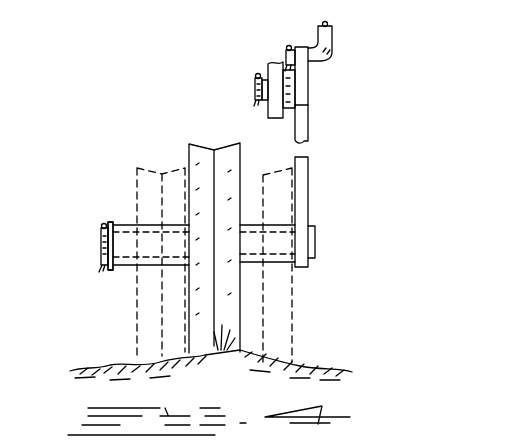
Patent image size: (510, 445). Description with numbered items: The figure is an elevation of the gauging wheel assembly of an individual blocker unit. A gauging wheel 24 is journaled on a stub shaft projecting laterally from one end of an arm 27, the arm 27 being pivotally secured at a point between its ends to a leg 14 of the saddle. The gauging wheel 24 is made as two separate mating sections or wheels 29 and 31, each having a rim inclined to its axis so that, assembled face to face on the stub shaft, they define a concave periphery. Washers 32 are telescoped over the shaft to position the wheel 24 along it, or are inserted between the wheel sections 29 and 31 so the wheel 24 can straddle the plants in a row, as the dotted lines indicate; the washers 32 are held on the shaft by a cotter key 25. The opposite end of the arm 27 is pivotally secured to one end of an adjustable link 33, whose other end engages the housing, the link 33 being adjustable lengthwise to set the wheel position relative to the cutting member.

The leg 14 is at (270, 63).
The gauging wheel 24 is at (178, 124).
The cotter key 25 is at (104, 226).
The arm 27 is at (312, 135).
The wheel section 29 is at (198, 126).
The wheel section 31 is at (249, 125).
The washers 32 is at (120, 270).
The adjustable link 33 is at (334, 31).